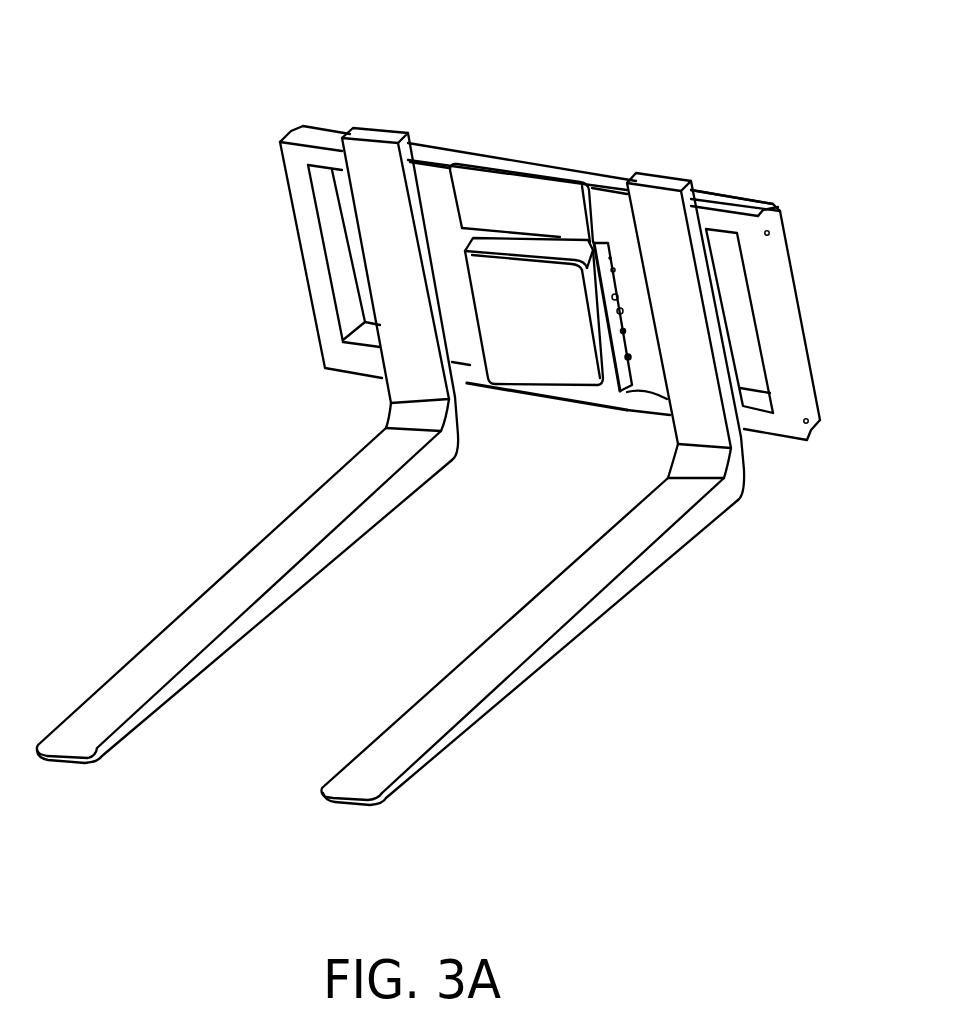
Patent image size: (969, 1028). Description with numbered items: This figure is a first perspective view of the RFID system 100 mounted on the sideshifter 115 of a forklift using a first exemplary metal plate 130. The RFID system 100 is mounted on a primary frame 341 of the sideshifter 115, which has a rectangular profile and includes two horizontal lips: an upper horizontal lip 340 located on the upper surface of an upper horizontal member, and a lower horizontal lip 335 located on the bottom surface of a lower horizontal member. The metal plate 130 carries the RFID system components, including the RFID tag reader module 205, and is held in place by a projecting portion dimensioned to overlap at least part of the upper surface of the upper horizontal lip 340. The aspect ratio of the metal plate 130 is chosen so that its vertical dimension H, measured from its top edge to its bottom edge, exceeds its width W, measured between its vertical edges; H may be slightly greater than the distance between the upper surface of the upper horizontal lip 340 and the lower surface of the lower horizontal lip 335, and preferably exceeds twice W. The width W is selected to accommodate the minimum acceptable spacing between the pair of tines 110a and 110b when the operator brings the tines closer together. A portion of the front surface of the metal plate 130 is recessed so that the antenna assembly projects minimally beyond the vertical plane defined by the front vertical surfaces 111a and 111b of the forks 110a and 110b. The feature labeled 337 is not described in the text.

The RFID system 100 is at (507, 505).
The tine 110a is at (137, 647).
The tine 110b is at (463, 733).
The front vertical surface 111a is at (370, 132).
The front vertical surface 111b is at (657, 178).
The sideshifter 115 is at (830, 323).
The metal plate 130 is at (568, 216).
The RFID tag reader module 205 is at (603, 240).
The lower horizontal lip 335 is at (807, 441).
The housing retention feature 337 is at (636, 390).
The upper horizontal lip 340 is at (752, 216).
The primary frame 341 is at (795, 268).